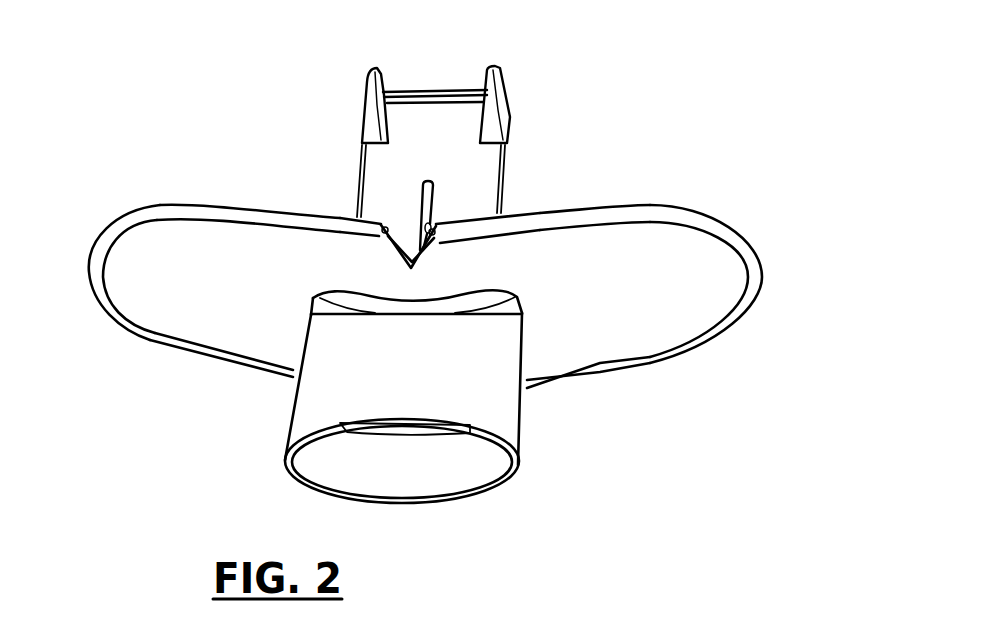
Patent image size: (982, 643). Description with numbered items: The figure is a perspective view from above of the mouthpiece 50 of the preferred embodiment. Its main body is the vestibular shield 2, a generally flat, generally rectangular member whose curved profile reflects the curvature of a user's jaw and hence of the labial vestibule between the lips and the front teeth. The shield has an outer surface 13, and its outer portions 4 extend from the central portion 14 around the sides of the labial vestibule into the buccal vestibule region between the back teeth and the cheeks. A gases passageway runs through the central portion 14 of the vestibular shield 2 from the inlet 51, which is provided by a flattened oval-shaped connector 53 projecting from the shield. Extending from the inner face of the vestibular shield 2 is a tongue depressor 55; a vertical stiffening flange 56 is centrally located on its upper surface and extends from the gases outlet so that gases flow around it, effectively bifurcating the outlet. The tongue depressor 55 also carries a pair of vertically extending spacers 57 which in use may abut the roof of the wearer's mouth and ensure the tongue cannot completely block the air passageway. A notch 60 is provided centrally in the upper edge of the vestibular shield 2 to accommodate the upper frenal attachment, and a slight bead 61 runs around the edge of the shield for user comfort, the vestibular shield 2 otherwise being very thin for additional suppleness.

The vestibular shield 2 is at (203, 257).
The outer portions 4 is at (110, 267).
The outer surface 13 is at (660, 313).
The central portion 14 is at (298, 277).
The mouthpiece 50 is at (200, 441).
The inlet 51 is at (419, 480).
The flattened oval-shaped connector 53 is at (508, 412).
The tongue depressor 55 is at (503, 145).
The vertical stiffening flange 56 is at (422, 202).
The vertically extending spacers 57 is at (483, 80).
The notch 60 is at (452, 292).
The bead 61 is at (755, 292).